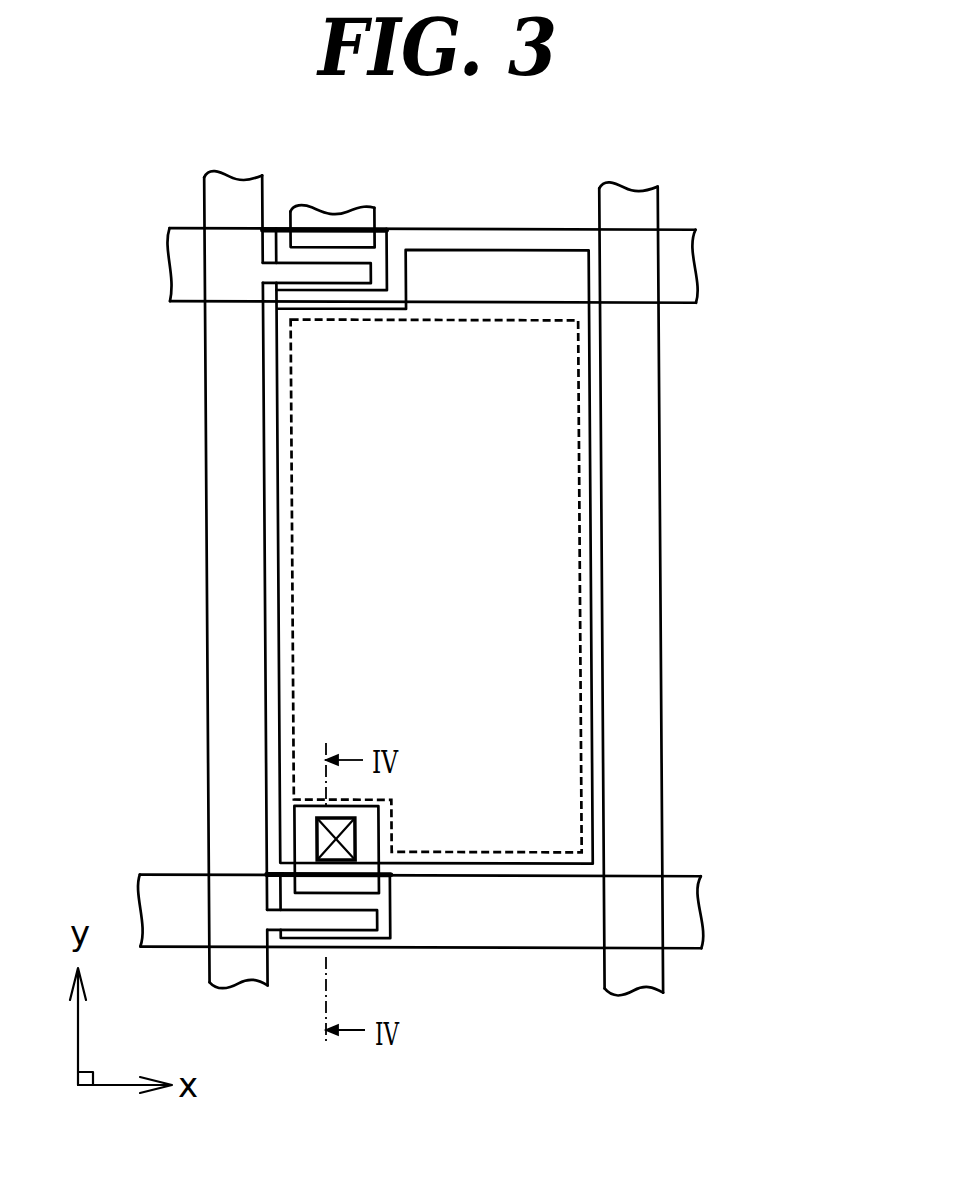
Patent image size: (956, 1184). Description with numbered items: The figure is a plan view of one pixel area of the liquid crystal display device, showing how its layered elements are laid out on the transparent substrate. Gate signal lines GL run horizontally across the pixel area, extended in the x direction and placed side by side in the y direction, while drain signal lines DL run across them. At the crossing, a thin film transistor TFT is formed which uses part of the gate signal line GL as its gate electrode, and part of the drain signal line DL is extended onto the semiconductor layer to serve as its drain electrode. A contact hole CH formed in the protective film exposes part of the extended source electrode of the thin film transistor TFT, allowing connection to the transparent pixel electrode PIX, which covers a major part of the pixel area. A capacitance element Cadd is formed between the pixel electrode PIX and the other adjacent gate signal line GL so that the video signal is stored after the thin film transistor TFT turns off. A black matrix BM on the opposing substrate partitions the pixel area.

The drain signal line DL is at (238, 970).
The gate signal line GL is at (685, 263).
The thin film transistor TFT is at (341, 938).
The capacitance element Cadd is at (511, 263).
The pixel electrode PIX is at (595, 660).
The black matrix BM is at (584, 486).
The contact hole CH is at (316, 845).